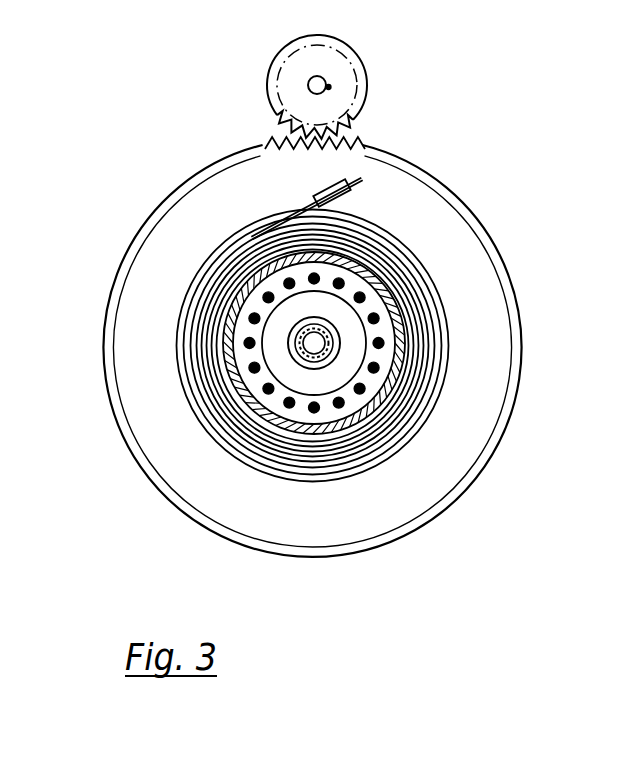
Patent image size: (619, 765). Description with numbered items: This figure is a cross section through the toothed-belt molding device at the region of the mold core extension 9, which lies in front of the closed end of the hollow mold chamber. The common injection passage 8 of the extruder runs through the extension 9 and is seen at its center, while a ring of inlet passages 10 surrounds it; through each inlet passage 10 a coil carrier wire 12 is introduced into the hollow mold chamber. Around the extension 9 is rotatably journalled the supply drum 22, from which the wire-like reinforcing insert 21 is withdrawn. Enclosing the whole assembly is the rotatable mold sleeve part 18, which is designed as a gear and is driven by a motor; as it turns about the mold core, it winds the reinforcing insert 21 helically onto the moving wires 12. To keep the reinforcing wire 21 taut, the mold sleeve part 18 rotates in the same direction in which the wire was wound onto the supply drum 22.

The injection passage 8 is at (318, 350).
The extension of the mold core 9 is at (328, 407).
The inlet passage 10 is at (252, 346).
The coil carrier wire 12 is at (292, 285).
The rotatable mold sleeve part 18 is at (492, 358).
The reinforcing insert 21 is at (312, 203).
The supply drum 22 is at (440, 300).